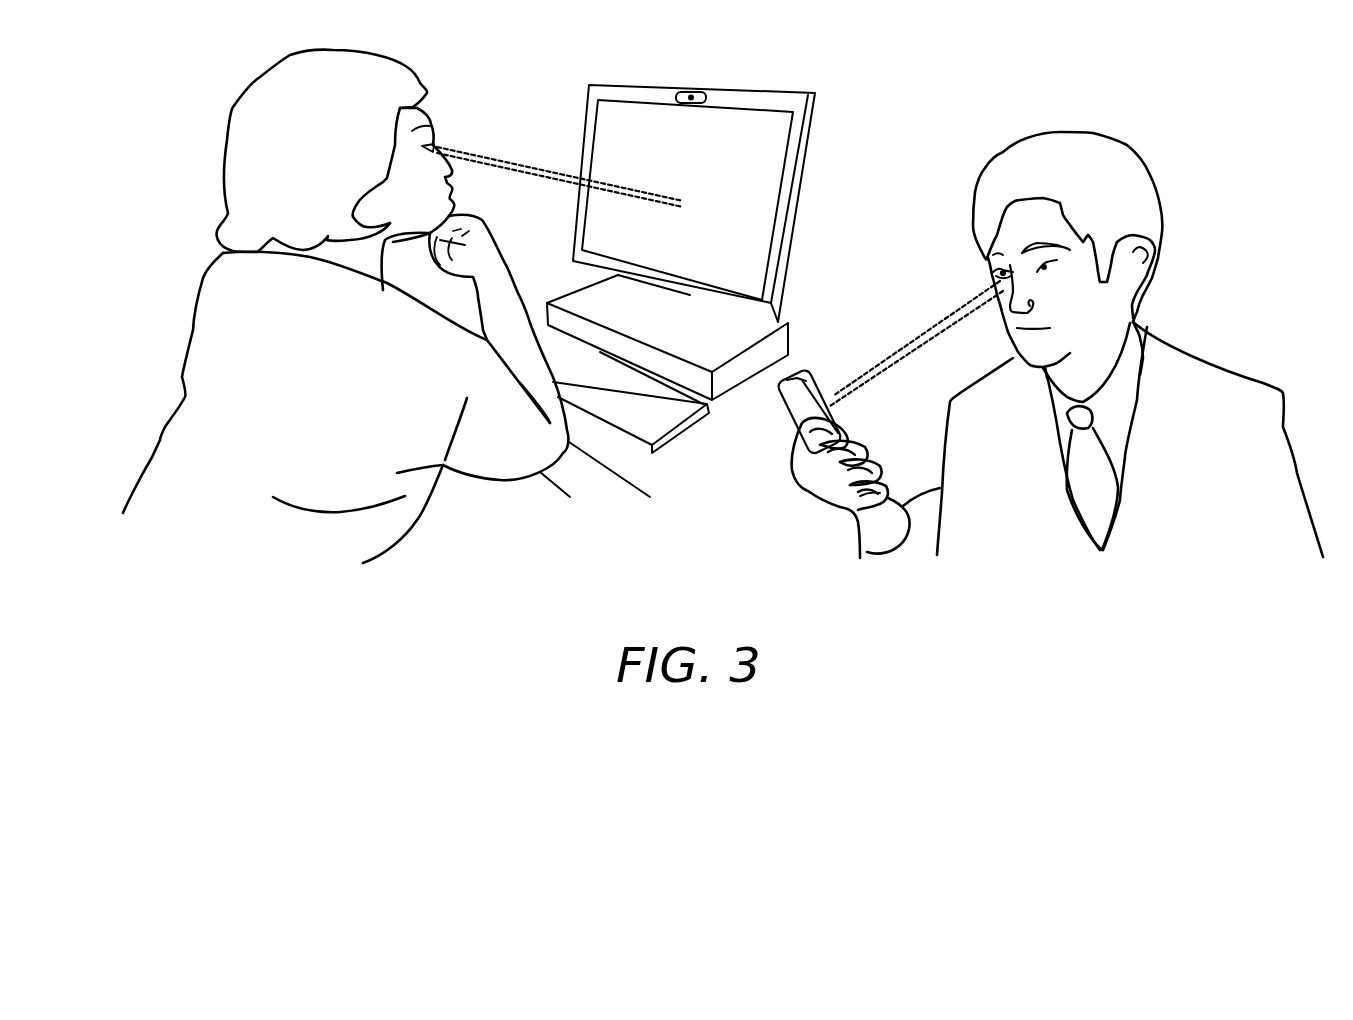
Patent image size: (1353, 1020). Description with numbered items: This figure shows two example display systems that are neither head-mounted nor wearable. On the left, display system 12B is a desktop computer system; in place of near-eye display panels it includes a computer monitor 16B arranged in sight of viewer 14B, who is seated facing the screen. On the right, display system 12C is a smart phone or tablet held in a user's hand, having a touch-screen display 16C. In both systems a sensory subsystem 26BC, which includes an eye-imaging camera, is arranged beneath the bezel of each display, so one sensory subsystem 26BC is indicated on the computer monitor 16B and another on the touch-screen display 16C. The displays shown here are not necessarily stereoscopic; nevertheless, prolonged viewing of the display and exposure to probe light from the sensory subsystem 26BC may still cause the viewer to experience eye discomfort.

The viewer 14B is at (164, 213).
The display system 12B is at (849, 210).
The computer monitor 16B is at (773, 154).
The sensory subsystem 26BC is at (687, 106).
The display system 12C is at (800, 410).
The touch-screen display 16C is at (837, 405).